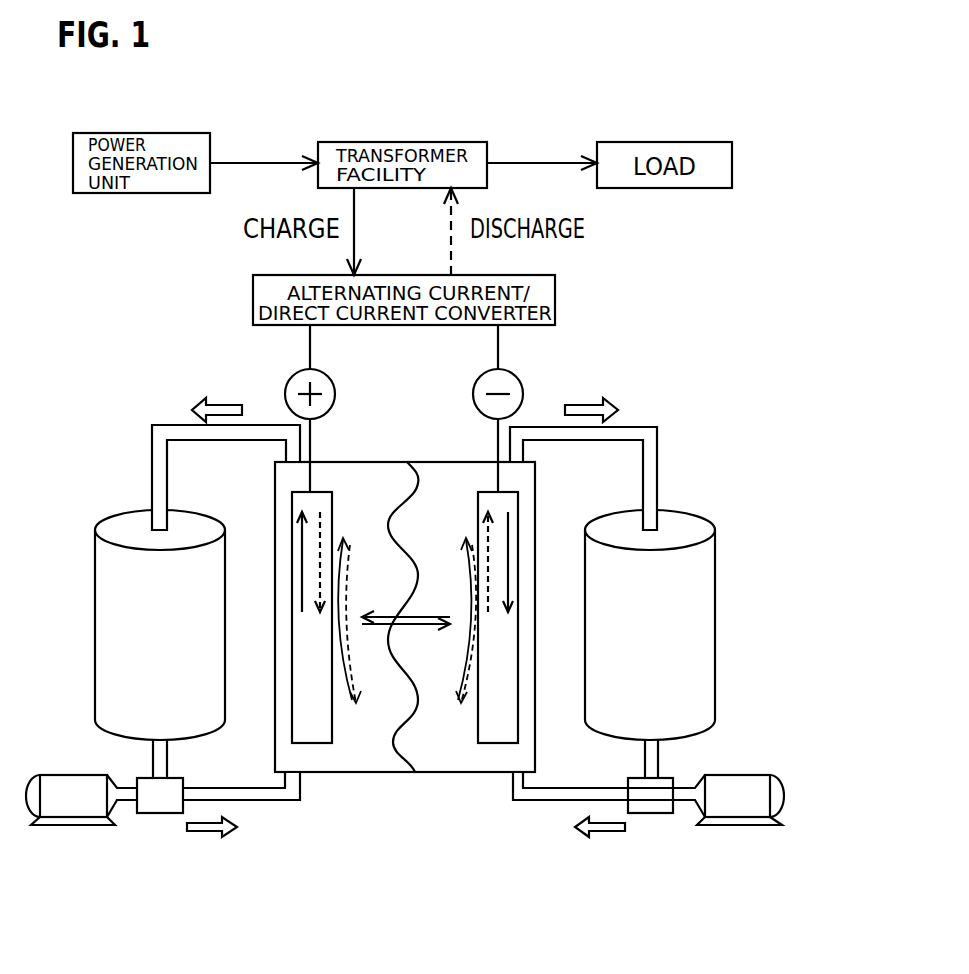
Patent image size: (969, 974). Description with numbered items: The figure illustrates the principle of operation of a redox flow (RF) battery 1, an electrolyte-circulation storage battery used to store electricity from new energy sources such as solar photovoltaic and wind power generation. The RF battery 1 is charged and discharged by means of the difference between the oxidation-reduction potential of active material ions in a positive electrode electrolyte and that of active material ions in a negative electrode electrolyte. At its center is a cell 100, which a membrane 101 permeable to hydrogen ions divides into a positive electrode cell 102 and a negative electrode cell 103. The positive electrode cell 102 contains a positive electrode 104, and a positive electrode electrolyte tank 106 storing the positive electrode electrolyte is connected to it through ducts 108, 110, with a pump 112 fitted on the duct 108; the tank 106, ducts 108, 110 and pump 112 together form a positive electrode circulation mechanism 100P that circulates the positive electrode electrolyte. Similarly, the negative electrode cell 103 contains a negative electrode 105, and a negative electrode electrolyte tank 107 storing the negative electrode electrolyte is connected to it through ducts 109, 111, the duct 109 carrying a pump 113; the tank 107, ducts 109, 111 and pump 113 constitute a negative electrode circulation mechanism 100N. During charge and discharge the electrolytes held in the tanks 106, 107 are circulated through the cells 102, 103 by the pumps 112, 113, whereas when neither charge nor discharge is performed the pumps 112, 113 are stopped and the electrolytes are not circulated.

The RF battery 1 is at (700, 358).
The cell 100 is at (405, 693).
The membrane 101 is at (418, 748).
The positive electrode cell 102 is at (340, 775).
The negative electrode cell 103 is at (470, 775).
The positive electrode 104 is at (288, 728).
The negative electrode 105 is at (522, 728).
The positive electrode electrolyte tank 106 is at (112, 523).
The negative electrode electrolyte tank 107 is at (697, 520).
The duct 108 is at (262, 800).
The duct 109 is at (548, 800).
The duct 110 is at (165, 420).
The duct 111 is at (640, 425).
The pump 112 is at (55, 772).
The pump 113 is at (757, 773).
The positive electrode circulation mechanism 100P is at (98, 821).
The negative electrode circulation mechanism 100N is at (712, 821).